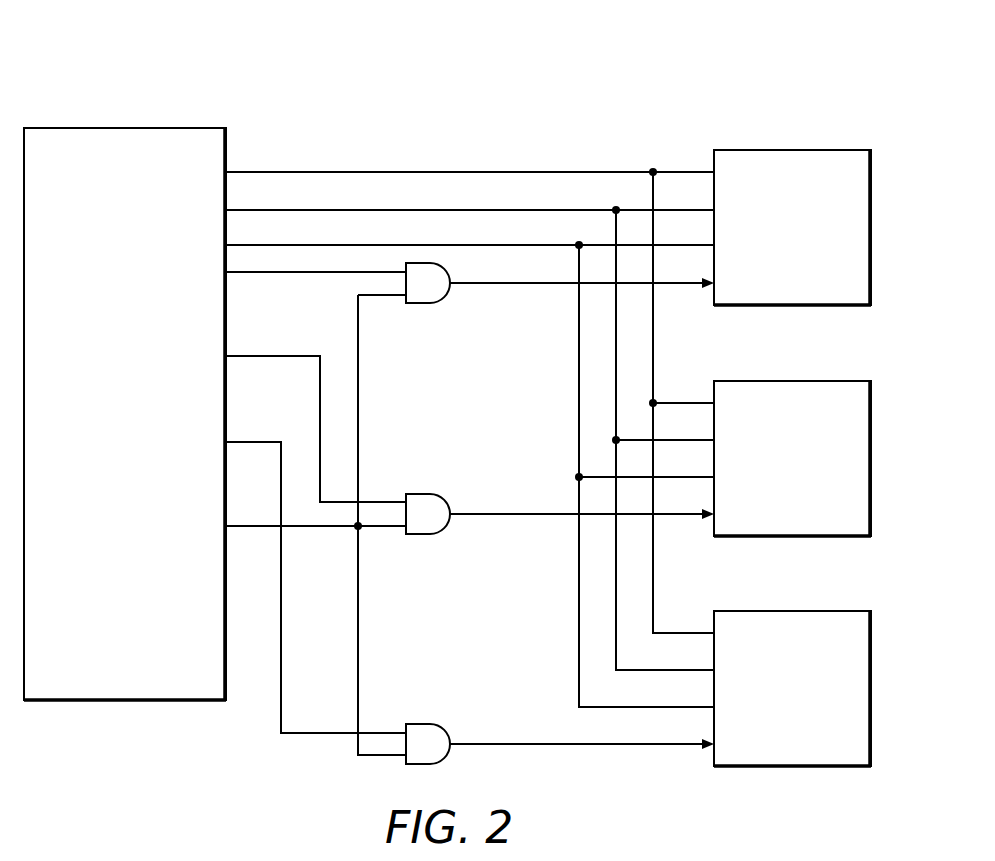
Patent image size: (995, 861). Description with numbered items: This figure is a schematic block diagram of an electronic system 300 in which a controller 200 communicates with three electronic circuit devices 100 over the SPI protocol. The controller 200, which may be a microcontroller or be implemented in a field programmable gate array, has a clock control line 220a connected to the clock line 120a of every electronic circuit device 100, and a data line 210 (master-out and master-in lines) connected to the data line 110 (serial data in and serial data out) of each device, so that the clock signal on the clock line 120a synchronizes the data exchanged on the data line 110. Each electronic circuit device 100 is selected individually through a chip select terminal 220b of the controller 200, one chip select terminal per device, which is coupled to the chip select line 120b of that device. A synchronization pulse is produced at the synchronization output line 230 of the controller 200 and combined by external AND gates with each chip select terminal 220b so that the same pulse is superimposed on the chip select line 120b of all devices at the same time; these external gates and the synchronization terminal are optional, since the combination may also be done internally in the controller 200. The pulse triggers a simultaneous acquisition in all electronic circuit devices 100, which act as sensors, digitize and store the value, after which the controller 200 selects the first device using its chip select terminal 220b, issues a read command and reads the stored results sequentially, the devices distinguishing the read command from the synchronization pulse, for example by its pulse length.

The electronic circuit device 100 is at (840, 611).
The data line 110 is at (759, 716).
The clock line 120a is at (791, 633).
The chip select (CS) line 120b is at (783, 744).
The controller 200 is at (190, 127).
The data line 210 is at (168, 199).
The control line 220a is at (182, 172).
The cs1 terminal 220b is at (182, 272).
The synchronization output line 230 is at (171, 526).
The electronic system 300 is at (633, 54).